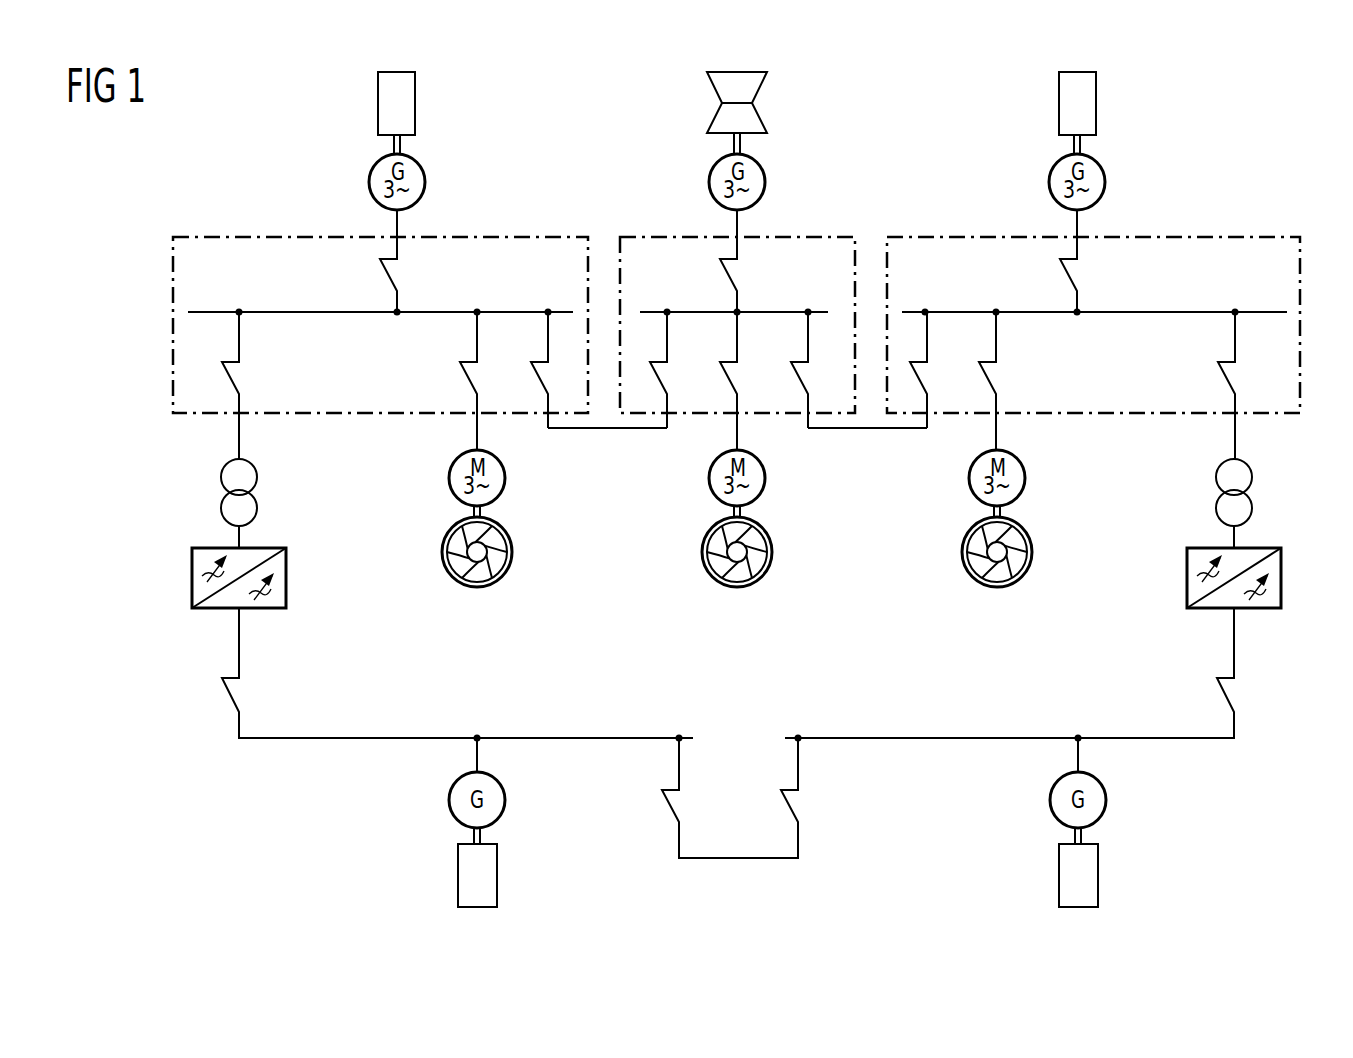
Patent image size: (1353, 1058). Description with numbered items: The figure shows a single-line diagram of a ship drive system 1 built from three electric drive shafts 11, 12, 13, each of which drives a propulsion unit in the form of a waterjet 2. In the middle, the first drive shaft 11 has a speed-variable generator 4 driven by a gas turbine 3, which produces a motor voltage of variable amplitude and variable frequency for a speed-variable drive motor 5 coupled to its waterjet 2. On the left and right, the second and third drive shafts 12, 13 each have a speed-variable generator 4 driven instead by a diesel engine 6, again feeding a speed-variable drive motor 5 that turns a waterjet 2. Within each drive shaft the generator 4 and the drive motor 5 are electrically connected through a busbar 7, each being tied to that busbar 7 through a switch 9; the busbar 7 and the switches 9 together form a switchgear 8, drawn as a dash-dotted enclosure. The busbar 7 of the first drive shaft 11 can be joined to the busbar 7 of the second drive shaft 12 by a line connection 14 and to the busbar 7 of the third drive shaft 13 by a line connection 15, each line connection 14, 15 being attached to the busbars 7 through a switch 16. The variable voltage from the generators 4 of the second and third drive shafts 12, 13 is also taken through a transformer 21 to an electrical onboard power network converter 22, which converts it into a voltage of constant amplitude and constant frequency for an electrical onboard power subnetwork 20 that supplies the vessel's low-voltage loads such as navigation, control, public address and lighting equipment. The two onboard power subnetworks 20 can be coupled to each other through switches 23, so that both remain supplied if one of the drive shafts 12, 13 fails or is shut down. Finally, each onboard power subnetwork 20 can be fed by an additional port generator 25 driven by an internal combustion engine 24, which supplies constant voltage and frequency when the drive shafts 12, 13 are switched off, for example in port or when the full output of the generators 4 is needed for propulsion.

The ship drive system 1 is at (233, 176).
The waterjet 2 is at (513, 548).
The gas turbine 3 is at (762, 112).
The speed-variable generator 4 is at (426, 180).
The speed-variable drive motor 5 is at (506, 477).
The diesel engine 6 is at (417, 100).
The busbar 7 is at (439, 312).
The switchgear 8 is at (528, 237).
The switch 9 is at (383, 279).
The first drive shaft 11 is at (772, 340).
The second drive shaft 12 is at (402, 355).
The third drive shaft 13 is at (1072, 355).
The line connection 14 is at (605, 435).
The line connection 15 is at (870, 435).
The switch 16 is at (536, 377).
The electrical onboard power subnetwork 20 is at (360, 743).
The transformer 21 is at (258, 477).
The electrical onboard power network converter 22 is at (192, 577).
The switch 23 is at (668, 804).
The internal combustion engine 24 is at (497, 877).
The port generator 25 is at (506, 798).